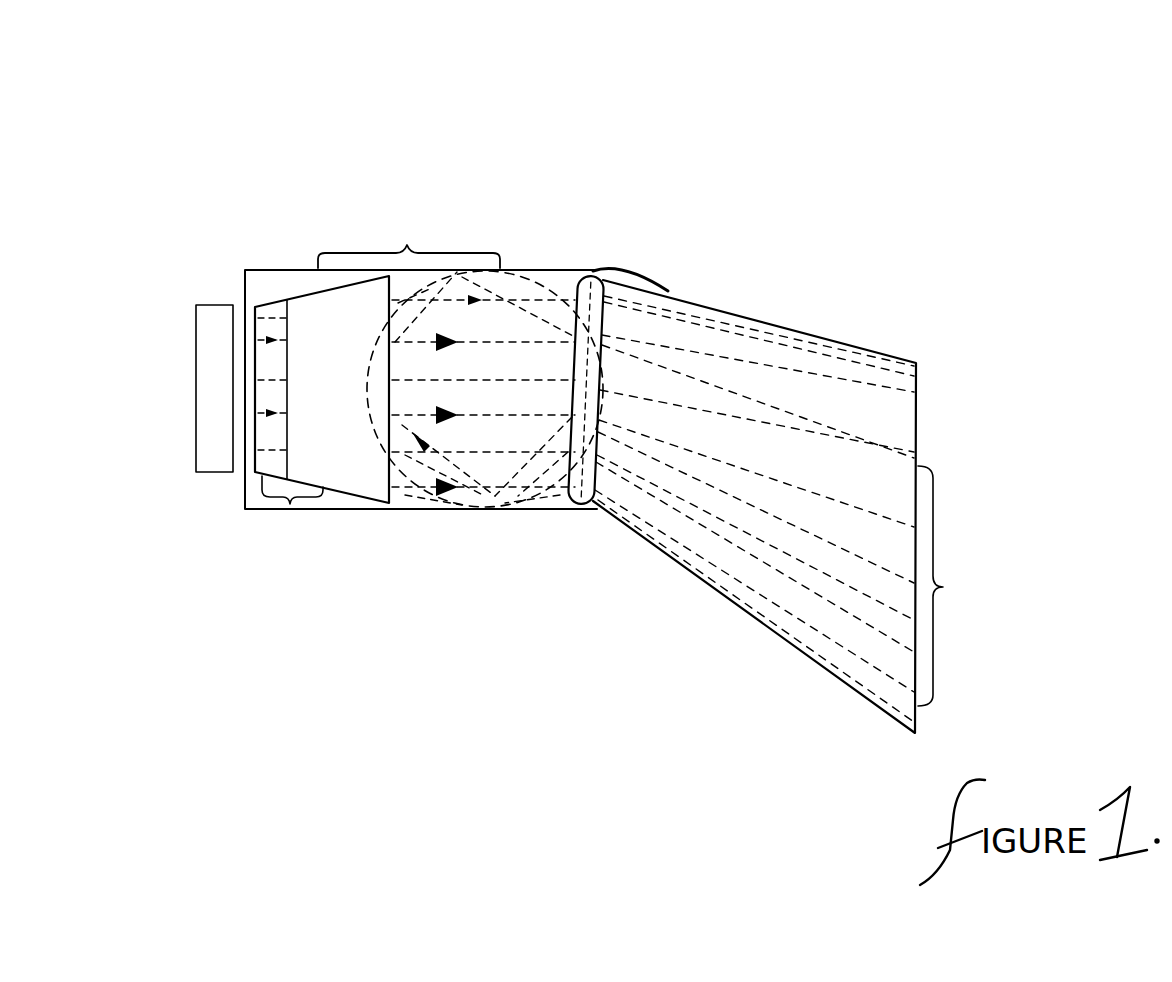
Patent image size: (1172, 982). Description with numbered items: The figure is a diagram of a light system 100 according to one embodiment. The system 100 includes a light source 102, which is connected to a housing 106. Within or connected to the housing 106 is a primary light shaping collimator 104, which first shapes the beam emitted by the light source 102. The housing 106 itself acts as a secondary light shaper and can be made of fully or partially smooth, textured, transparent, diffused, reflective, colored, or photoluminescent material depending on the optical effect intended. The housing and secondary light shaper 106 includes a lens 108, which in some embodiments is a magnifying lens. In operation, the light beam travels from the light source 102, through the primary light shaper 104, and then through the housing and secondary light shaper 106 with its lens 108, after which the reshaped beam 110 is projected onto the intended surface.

The light system 100 is at (668, 93).
The light source 102 is at (196, 440).
The primary light shaping collimator 104 is at (290, 504).
The housing and secondary light shaper 106 is at (407, 245).
The lens 108 is at (580, 507).
The reshaped beam 110 is at (807, 506).